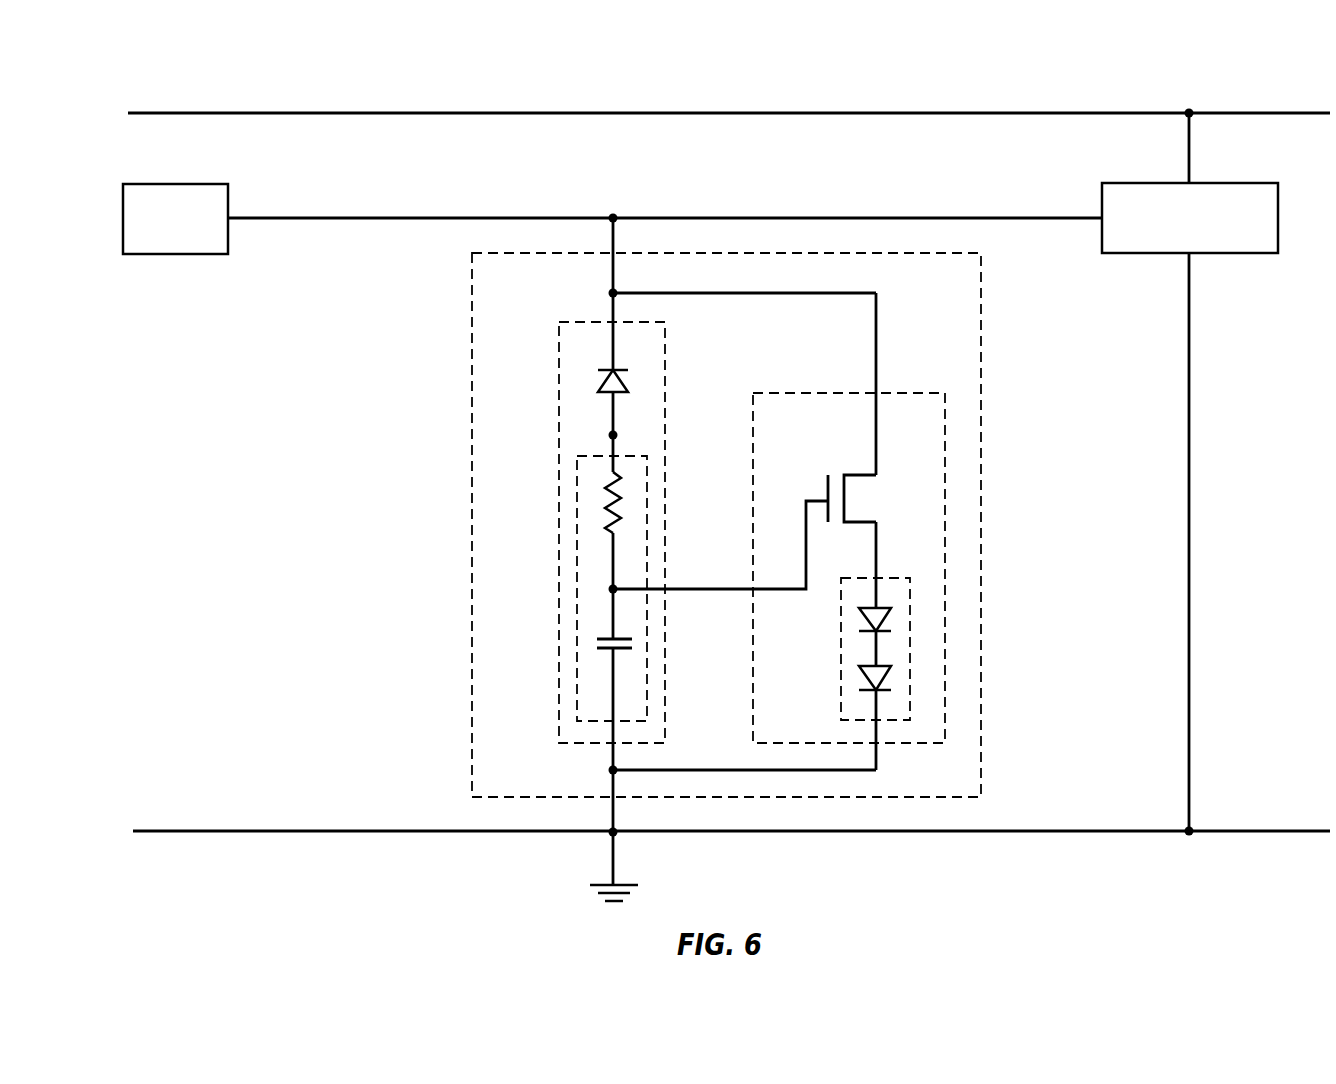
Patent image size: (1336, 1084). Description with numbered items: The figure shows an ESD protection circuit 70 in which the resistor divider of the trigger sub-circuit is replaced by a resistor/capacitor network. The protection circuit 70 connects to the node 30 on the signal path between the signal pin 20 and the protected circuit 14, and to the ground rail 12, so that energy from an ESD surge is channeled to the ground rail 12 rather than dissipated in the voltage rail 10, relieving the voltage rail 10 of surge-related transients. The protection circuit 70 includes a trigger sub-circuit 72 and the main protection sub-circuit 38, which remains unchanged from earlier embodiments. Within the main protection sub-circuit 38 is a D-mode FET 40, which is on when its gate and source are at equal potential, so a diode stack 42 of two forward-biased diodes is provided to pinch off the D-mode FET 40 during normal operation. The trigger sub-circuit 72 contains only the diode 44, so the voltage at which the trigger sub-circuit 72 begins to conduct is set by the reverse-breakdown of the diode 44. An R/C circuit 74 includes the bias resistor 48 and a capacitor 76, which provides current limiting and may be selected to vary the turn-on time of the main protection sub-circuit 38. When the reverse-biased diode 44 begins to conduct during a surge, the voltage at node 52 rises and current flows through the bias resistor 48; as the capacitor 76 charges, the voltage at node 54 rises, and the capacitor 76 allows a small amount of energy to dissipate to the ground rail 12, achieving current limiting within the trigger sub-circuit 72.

The voltage rail 10 is at (260, 113).
The ground rail 12 is at (247, 831).
The protected circuit 14 is at (1240, 183).
The signal pin 20 is at (200, 184).
The node 30 is at (636, 195).
The main protection sub-circuit 38 is at (893, 393).
The D-mode FET 40 is at (860, 497).
The diode stack 42 is at (912, 615).
The diode 44 is at (622, 384).
The bias resistor 48 is at (620, 515).
The node 52 is at (599, 430).
The node 54 is at (599, 581).
The ESD protection circuit 70 is at (472, 382).
The trigger sub-circuit 72 is at (560, 358).
The R/C circuit 74 is at (648, 475).
The capacitor 76 is at (625, 638).